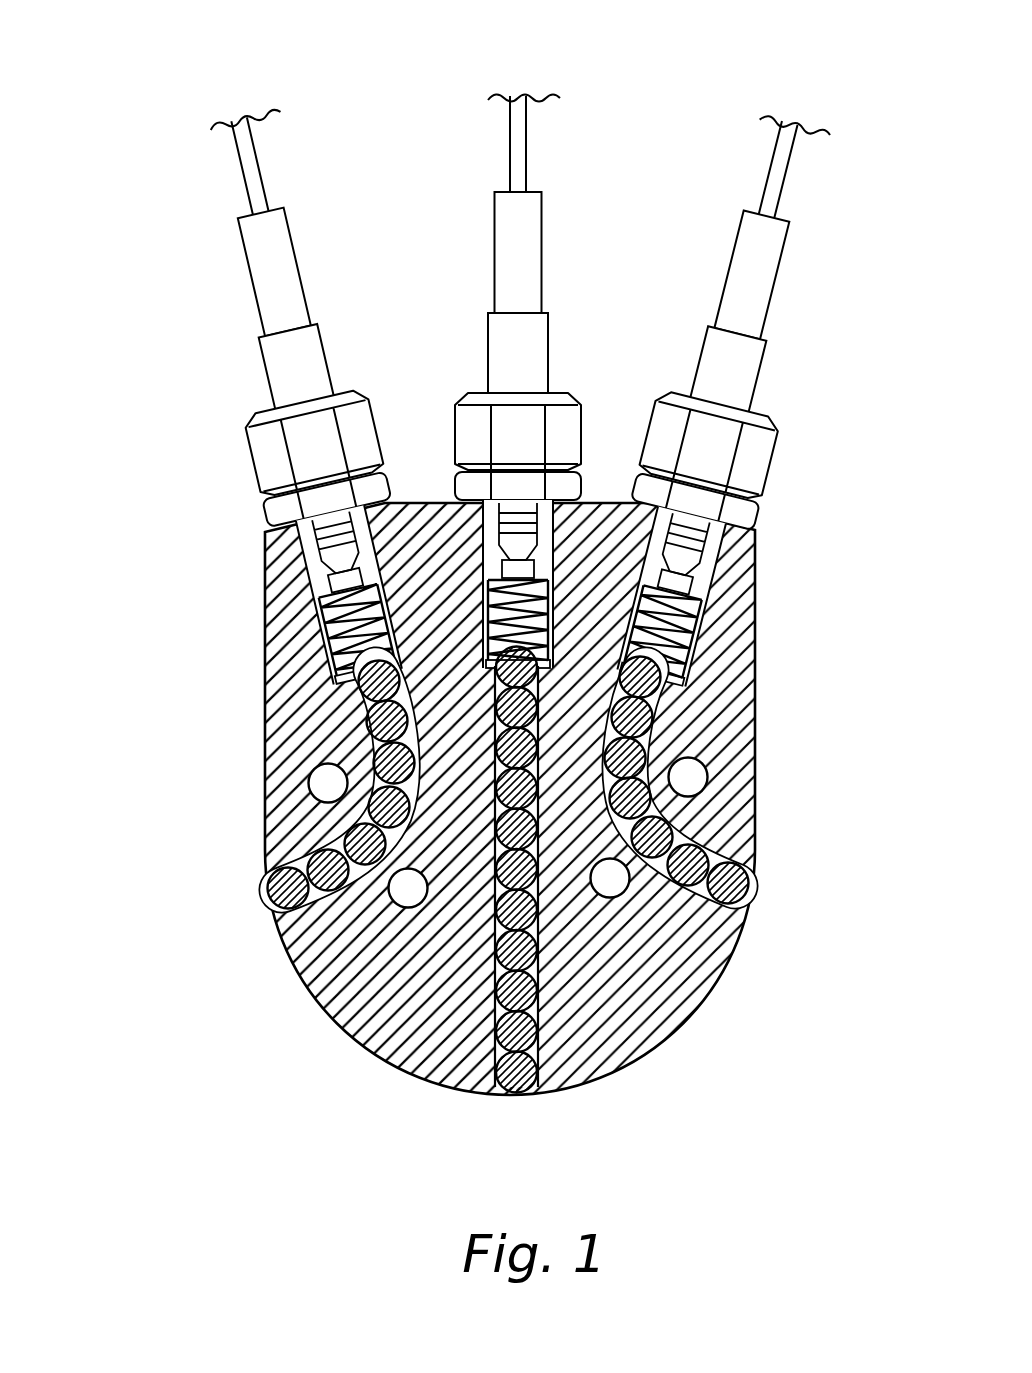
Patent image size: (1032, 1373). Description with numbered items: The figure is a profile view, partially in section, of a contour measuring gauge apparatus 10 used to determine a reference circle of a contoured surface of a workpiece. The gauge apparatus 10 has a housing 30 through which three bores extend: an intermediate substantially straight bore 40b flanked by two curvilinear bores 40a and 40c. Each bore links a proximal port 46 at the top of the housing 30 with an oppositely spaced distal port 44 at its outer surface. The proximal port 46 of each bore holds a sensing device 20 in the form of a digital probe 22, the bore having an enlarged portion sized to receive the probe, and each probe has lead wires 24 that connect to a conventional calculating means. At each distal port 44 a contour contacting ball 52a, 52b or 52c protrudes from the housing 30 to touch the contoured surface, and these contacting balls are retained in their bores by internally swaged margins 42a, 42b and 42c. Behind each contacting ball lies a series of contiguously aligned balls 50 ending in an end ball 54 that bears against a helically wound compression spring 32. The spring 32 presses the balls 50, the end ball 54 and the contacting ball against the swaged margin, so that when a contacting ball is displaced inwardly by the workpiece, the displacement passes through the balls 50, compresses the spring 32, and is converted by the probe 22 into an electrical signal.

The contour measuring gauge apparatus 10 is at (148, 108).
The sensing device 20 is at (160, 143).
The digital probe 22 is at (488, 303).
The lead wires 24 is at (772, 148).
The housing 30 is at (640, 1060).
The helically wound compression spring 32 is at (690, 640).
The curvilinear bore 40a is at (300, 845).
The straight bore 40b is at (543, 985).
The curvilinear bore 40c is at (708, 897).
The internally swaged margin 42a is at (275, 905).
The internally swaged margin 42b is at (538, 1090).
The internally swaged margin 42c is at (745, 915).
The distal port 44 is at (270, 905).
The proximal port 46 is at (575, 525).
The series of balls 50 is at (298, 875).
The contour contacting ball 52a is at (262, 878).
The contour contacting ball 52b is at (513, 1082).
The contour contacting ball 52c is at (745, 897).
The end ball 54 is at (358, 688).